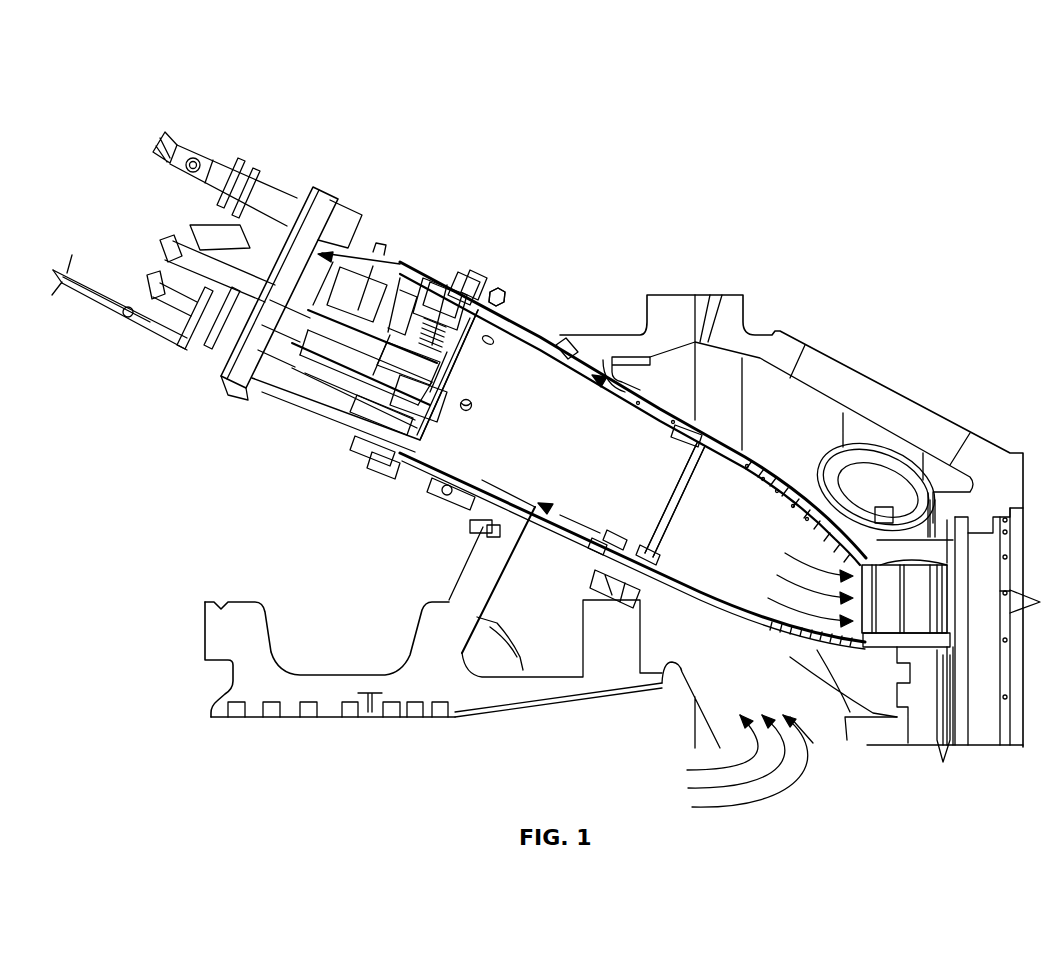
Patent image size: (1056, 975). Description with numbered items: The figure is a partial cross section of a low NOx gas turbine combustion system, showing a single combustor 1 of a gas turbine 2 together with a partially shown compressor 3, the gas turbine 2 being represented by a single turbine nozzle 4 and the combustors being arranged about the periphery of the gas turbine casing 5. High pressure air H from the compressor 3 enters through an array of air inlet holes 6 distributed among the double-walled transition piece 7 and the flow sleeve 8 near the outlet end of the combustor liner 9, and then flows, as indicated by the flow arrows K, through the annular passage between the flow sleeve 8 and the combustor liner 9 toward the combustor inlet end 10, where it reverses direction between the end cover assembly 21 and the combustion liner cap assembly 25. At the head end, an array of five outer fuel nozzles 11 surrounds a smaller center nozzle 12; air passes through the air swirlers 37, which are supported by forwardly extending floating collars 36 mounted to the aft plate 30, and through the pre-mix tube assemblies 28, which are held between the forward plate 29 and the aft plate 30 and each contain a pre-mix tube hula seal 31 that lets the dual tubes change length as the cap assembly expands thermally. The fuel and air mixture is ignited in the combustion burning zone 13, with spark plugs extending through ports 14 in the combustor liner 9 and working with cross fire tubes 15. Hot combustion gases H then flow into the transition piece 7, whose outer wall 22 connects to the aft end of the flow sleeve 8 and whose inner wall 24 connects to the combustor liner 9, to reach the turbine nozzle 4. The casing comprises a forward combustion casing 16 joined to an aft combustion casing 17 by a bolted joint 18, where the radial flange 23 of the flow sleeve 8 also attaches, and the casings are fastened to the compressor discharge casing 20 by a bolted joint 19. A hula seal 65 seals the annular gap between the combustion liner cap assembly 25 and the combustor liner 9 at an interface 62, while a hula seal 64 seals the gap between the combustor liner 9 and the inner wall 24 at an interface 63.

The combustor 1 is at (275, 75).
The gas turbine 2 is at (688, 288).
The compressor 3 is at (342, 724).
The turbine nozzle 4 is at (873, 657).
The gas turbine casing 5 is at (655, 335).
The air inlet holes 6 is at (587, 530).
The transition piece 7 is at (697, 574).
The flow sleeve 8 is at (561, 508).
The combustor liner 9 is at (534, 490).
The combustor inlet end 10 is at (365, 250).
The outer fuel nozzles 11 is at (230, 384).
The center nozzle 12 is at (372, 250).
The combustion burning zone 13 is at (495, 392).
The ports 14 is at (492, 344).
The cross fire tubes 15 is at (469, 412).
The forward combustion casing 16 is at (357, 403).
The aft combustion casing 17 is at (420, 476).
The bolted joint 18 is at (380, 470).
The bolted joint 19 is at (470, 526).
The compressor discharge casing 20 is at (460, 595).
The end cover assembly 21 is at (222, 396).
The outer wall 22 is at (733, 444).
The radial flange 23 is at (487, 283).
The inner wall 24 is at (750, 483).
The combustion liner cap assembly 25 is at (432, 270).
The pre-mix tube assemblies 28 is at (474, 274).
The forward plate 29 is at (416, 258).
The aft plate 30 is at (428, 421).
The pre-mix tube hula seal 31 is at (455, 352).
The floating collars 36 is at (373, 296).
The air swirler 37 is at (335, 408).
The interface 62 is at (503, 297).
The interface 63 is at (688, 447).
The hula seal 64 is at (675, 500).
The hula seal 65 is at (497, 297).
The flow arrows K is at (322, 225).
The high pressure air / hot combustion gases H is at (779, 541).